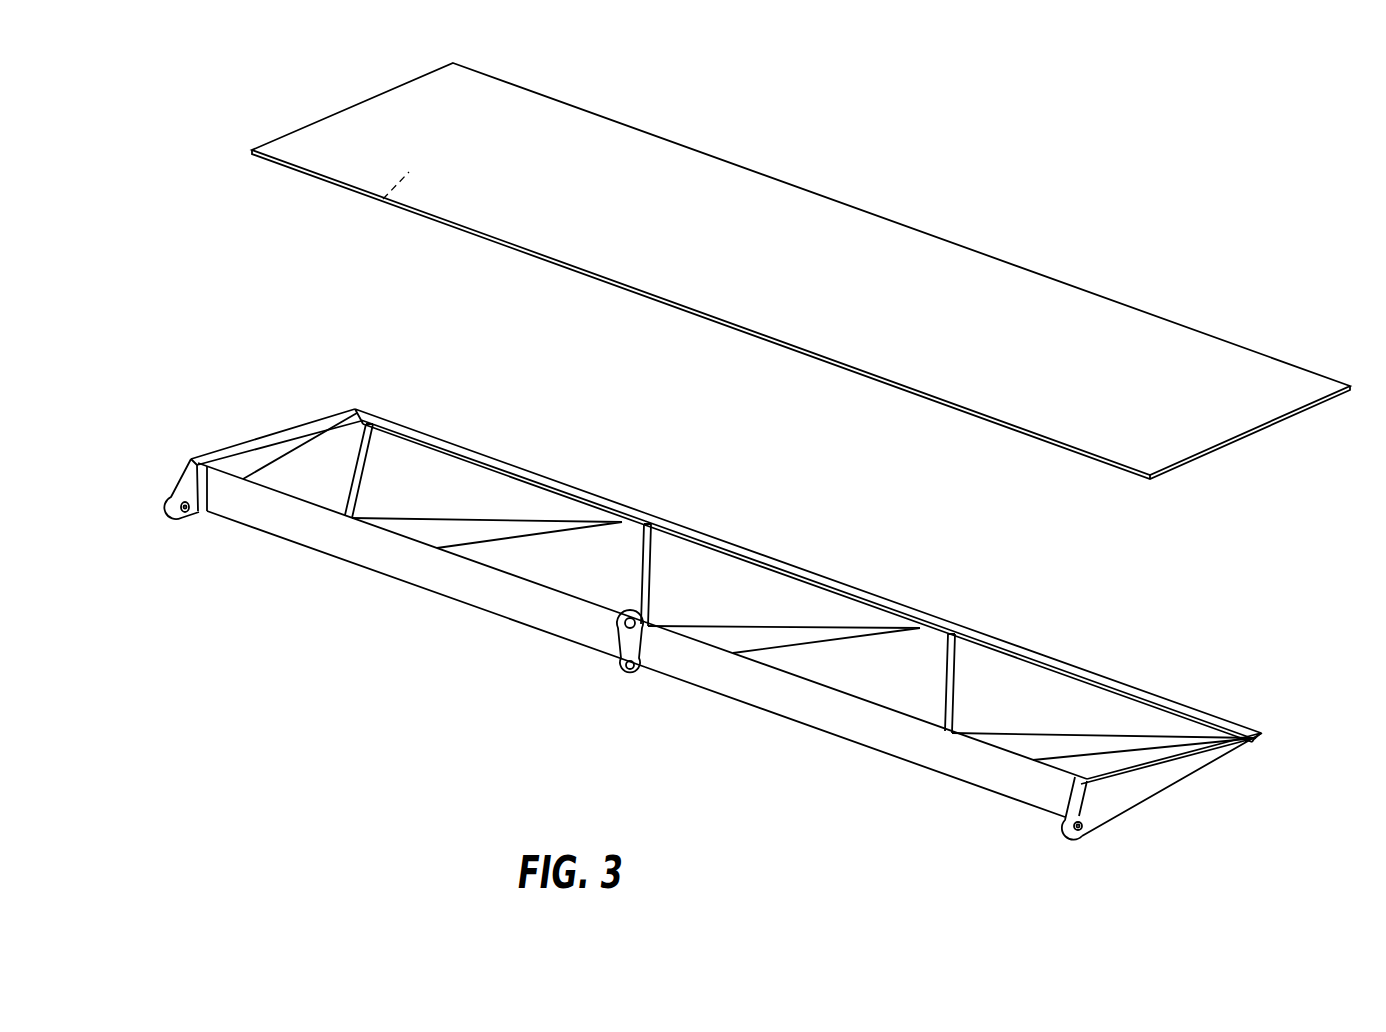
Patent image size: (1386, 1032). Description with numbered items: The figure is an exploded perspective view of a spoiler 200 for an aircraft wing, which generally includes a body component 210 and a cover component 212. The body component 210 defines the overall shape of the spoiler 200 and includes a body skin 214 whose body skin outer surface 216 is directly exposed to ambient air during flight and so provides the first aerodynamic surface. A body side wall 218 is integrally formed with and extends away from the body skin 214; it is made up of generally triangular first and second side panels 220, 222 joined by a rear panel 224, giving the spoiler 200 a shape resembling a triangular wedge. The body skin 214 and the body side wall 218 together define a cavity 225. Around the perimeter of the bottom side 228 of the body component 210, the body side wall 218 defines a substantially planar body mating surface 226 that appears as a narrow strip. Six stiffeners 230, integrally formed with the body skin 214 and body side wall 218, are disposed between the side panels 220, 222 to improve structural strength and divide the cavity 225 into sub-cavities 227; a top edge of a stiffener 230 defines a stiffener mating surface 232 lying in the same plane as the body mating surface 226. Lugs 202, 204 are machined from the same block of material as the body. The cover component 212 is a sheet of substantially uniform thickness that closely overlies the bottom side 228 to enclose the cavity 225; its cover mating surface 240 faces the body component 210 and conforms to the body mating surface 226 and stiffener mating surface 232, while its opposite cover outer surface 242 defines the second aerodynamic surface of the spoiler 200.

The spoiler 200 is at (185, 185).
The lug 202 is at (620, 675).
The lug 204 is at (174, 512).
The body component 210 is at (771, 765).
The cover component 212 is at (825, 205).
The body skin 214 is at (762, 578).
The body skin outer surface 216 is at (452, 486).
The body side wall 218 is at (964, 775).
The first side panel 220 is at (258, 450).
The second side panel 222 is at (1122, 797).
The rear panel 224 is at (465, 585).
The cavity 225 is at (1074, 690).
The body mating surface 226 is at (307, 425).
The sub-cavity 227 is at (398, 445).
The bottom side 228 is at (203, 448).
The stiffener 230 is at (355, 512).
The stiffener mating surface 232 is at (647, 528).
The cover mating surface 240 is at (390, 190).
The cover outer surface 242 is at (515, 100).